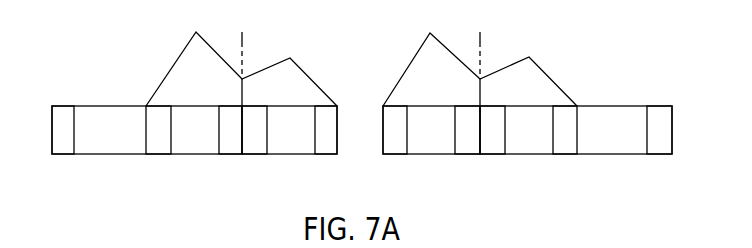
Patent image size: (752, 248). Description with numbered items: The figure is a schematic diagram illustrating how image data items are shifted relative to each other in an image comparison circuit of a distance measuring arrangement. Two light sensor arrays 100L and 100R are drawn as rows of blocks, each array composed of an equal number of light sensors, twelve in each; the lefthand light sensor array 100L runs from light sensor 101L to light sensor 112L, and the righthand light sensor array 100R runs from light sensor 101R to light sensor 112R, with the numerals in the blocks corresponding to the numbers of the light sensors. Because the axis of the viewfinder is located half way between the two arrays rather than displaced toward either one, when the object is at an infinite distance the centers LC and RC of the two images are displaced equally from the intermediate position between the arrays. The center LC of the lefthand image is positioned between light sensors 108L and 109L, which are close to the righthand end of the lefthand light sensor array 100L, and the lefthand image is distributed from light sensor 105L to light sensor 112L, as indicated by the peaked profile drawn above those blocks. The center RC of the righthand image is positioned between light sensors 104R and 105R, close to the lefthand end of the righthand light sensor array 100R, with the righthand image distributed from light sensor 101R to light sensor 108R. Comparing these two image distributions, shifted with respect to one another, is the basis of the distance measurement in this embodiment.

The lefthand light sensor array 100L is at (117, 106).
The light sensor 101L is at (66, 155).
The light sensor 105L is at (157, 155).
The light sensor 108L is at (230, 155).
The light sensor 109L is at (255, 155).
The light sensor 112L is at (318, 155).
The center of the lefthand image LC is at (243, 41).
The righthand light sensor array 100R is at (612, 106).
The light sensor 101R is at (397, 155).
The light sensor 104R is at (464, 155).
The light sensor 105R is at (493, 155).
The light sensor 108R is at (562, 155).
The light sensor 112R is at (657, 155).
The center of the righthand image RC is at (481, 41).